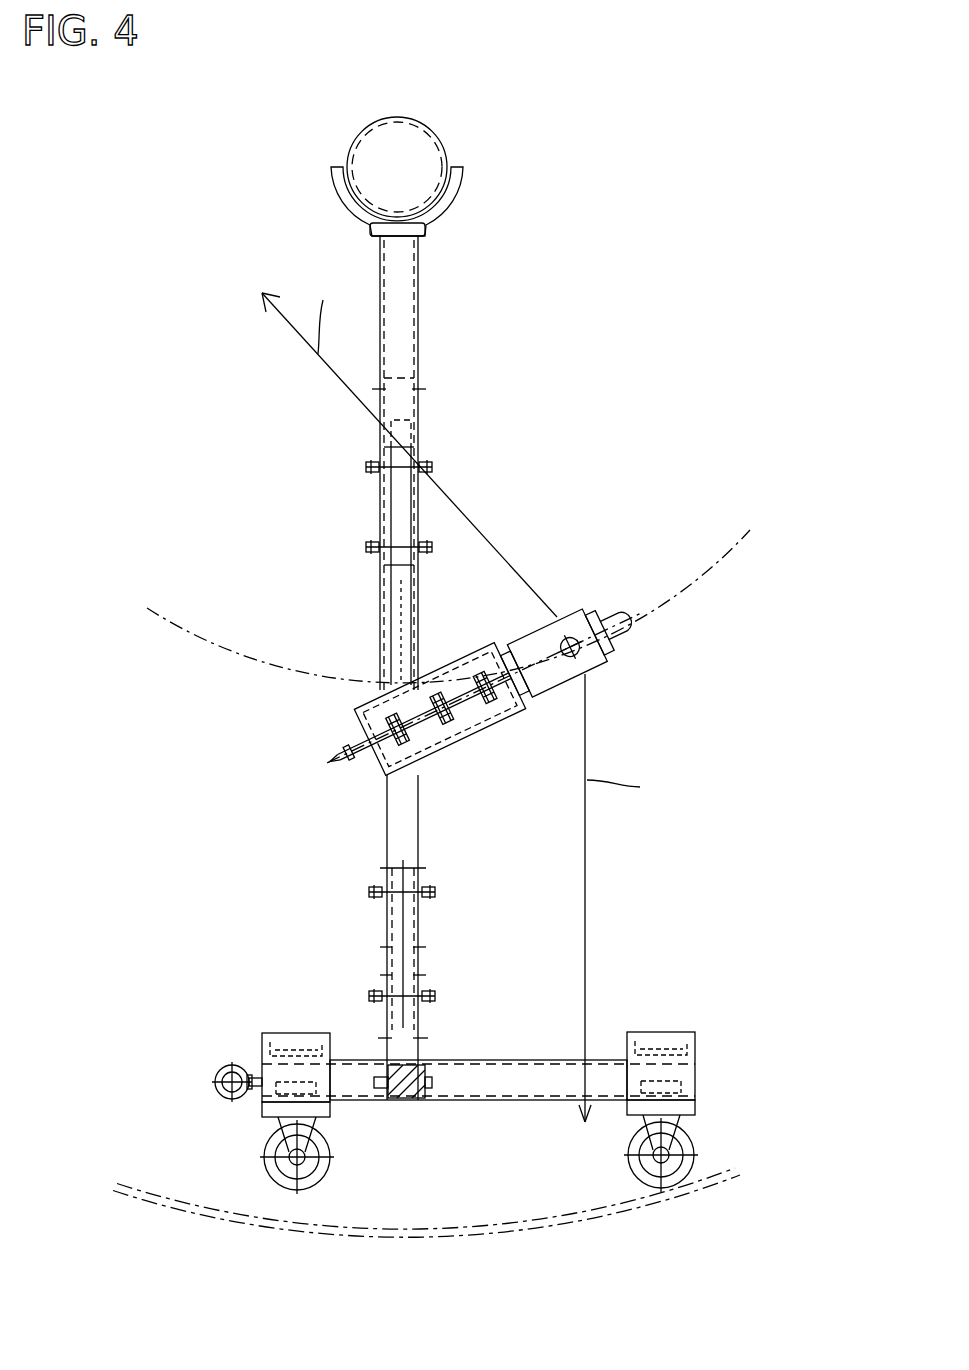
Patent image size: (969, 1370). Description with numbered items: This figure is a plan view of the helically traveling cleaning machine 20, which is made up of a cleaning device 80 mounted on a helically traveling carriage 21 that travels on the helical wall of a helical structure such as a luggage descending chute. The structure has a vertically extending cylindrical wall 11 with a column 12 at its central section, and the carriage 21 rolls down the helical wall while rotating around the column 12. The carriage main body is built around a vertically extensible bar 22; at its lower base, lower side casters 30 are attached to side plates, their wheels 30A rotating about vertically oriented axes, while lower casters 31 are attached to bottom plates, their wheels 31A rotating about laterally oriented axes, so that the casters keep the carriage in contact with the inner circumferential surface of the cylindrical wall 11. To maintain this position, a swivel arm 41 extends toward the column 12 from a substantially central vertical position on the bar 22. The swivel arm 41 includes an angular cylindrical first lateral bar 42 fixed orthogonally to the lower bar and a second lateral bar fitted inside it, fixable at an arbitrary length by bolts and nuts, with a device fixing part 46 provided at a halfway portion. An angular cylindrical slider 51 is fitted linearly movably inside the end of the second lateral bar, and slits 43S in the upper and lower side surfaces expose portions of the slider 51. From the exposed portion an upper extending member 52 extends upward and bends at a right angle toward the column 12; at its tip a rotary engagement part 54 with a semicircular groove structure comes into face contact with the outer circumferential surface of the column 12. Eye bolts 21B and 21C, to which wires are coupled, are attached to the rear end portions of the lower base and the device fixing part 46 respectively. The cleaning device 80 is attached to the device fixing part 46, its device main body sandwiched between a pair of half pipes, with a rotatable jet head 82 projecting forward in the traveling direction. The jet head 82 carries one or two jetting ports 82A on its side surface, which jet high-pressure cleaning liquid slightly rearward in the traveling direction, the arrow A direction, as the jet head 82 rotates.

The cylindrical wall 11 is at (505, 1220).
The column 12 is at (432, 120).
The helically traveling cleaning machine 20 is at (462, 717).
The helically traveling carriage 21 is at (445, 463).
The eye bolt 21B is at (215, 1082).
The eye bolt 21C is at (340, 757).
The vertically extensible bar 22 is at (435, 1105).
The lower side caster 30 is at (530, 1184).
The wheel 30A is at (325, 1180).
The lower caster 31 is at (484, 1031).
The wheel 31A is at (264, 1040).
The swivel arm 41 is at (445, 937).
The first lateral bar 42 is at (428, 1040).
The slit 43S is at (408, 612).
The device fixing part 46 is at (475, 714).
The slider 51 is at (400, 520).
The upper extending member 52 is at (408, 268).
The rotary engagement part 54 is at (466, 180).
The cleaning device 80 is at (527, 630).
The jet head 82 is at (594, 607).
The jetting port 82A is at (590, 651).